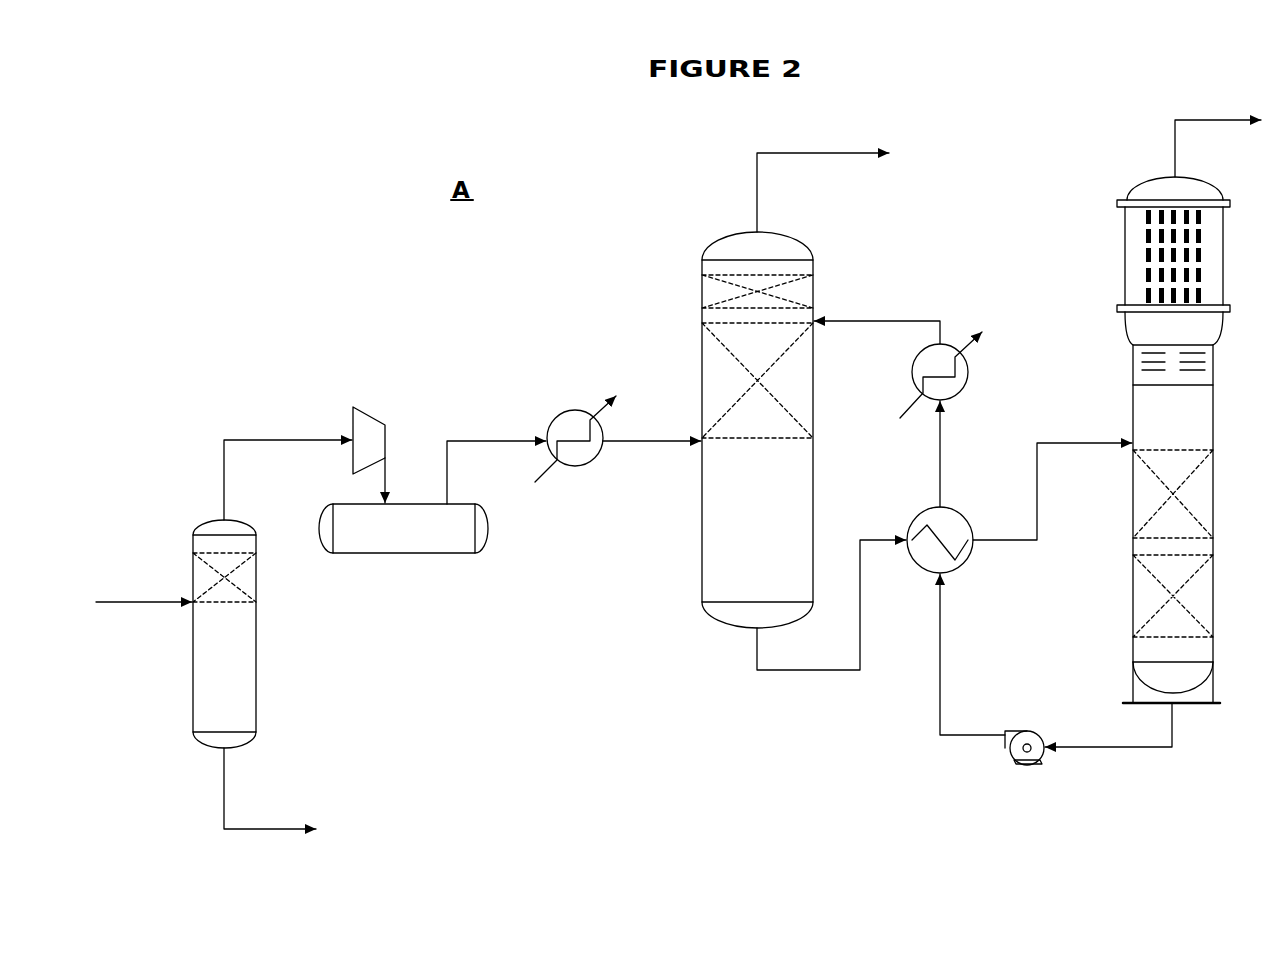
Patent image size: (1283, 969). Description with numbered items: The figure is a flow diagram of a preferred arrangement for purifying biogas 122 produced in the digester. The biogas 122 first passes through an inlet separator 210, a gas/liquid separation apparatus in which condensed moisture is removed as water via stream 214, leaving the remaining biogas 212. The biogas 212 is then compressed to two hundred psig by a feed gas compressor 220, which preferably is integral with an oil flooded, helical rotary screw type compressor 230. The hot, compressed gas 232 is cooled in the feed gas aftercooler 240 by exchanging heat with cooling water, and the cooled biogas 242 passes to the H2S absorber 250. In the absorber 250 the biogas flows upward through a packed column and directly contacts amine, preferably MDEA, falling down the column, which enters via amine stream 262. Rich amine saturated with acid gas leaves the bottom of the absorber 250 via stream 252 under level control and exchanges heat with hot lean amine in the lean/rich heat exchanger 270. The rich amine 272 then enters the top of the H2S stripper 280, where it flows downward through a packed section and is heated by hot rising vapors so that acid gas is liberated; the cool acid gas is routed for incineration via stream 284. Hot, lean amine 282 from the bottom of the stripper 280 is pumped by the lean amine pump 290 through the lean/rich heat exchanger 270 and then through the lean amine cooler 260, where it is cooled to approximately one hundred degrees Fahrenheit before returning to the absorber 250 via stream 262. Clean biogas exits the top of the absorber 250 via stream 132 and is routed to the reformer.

The biogas 122 is at (158, 600).
The clean biogas stream 132 is at (822, 151).
The inlet separator 210 is at (259, 643).
The remaining biogas 212 is at (278, 439).
The stream 214 is at (259, 831).
The feed gas compressor 220 is at (370, 412).
The oil flooded, helical rotary screw type compressor 230 is at (380, 555).
The hot, compressed gas 232 is at (500, 439).
The feed gas aftercooler 240 is at (574, 409).
The cooled biogas 242 is at (673, 444).
The H2S absorber 250 is at (700, 543).
The stream 252 is at (842, 671).
The lean amine cooler 260 is at (911, 368).
The amine stream 262 is at (920, 319).
The lean/rich heat exchanger 270 is at (974, 552).
The rich amine 272 is at (944, 431).
The H2S stripper 280 is at (1215, 463).
The hot, lean amine 282 is at (1148, 749).
The stream 284 is at (1226, 119).
The lean amine pump 290 is at (1026, 766).